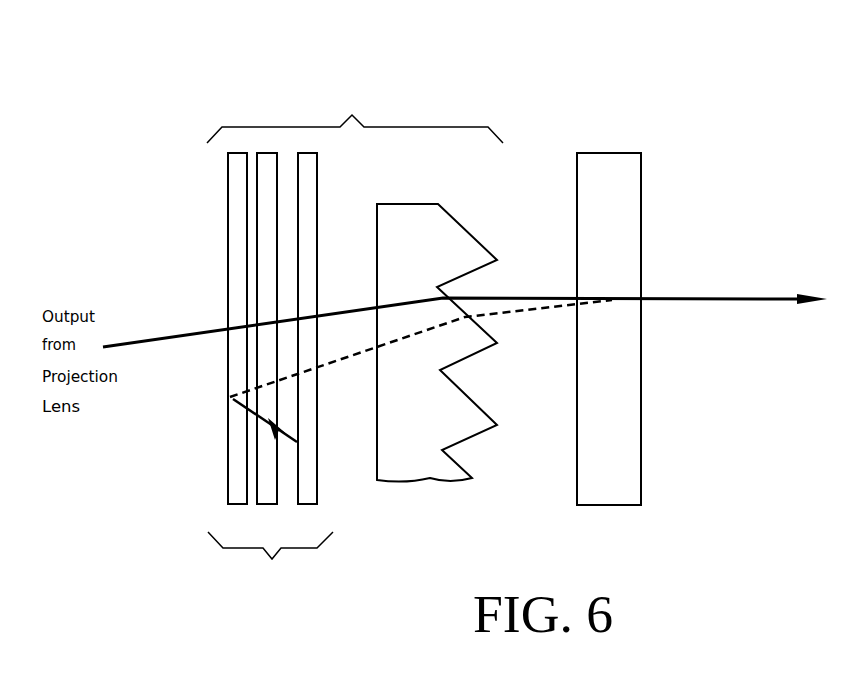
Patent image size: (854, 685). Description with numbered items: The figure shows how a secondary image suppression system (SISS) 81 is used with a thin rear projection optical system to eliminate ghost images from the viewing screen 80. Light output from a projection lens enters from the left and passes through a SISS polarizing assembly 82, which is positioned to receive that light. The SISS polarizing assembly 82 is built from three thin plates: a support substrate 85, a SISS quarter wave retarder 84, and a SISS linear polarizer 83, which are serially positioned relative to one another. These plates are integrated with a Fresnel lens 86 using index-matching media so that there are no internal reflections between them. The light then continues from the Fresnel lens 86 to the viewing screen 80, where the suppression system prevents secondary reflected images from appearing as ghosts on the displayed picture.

The viewing screen 80 is at (598, 167).
The secondary image suppression system 81 is at (355, 114).
The SISS polarizing assembly 82 is at (270, 561).
The SISS linear polarizer 83 is at (307, 163).
The SISS quarter wave retarder 84 is at (267, 163).
The support substrate 85 is at (237, 463).
The Fresnel lens 86 is at (422, 215).